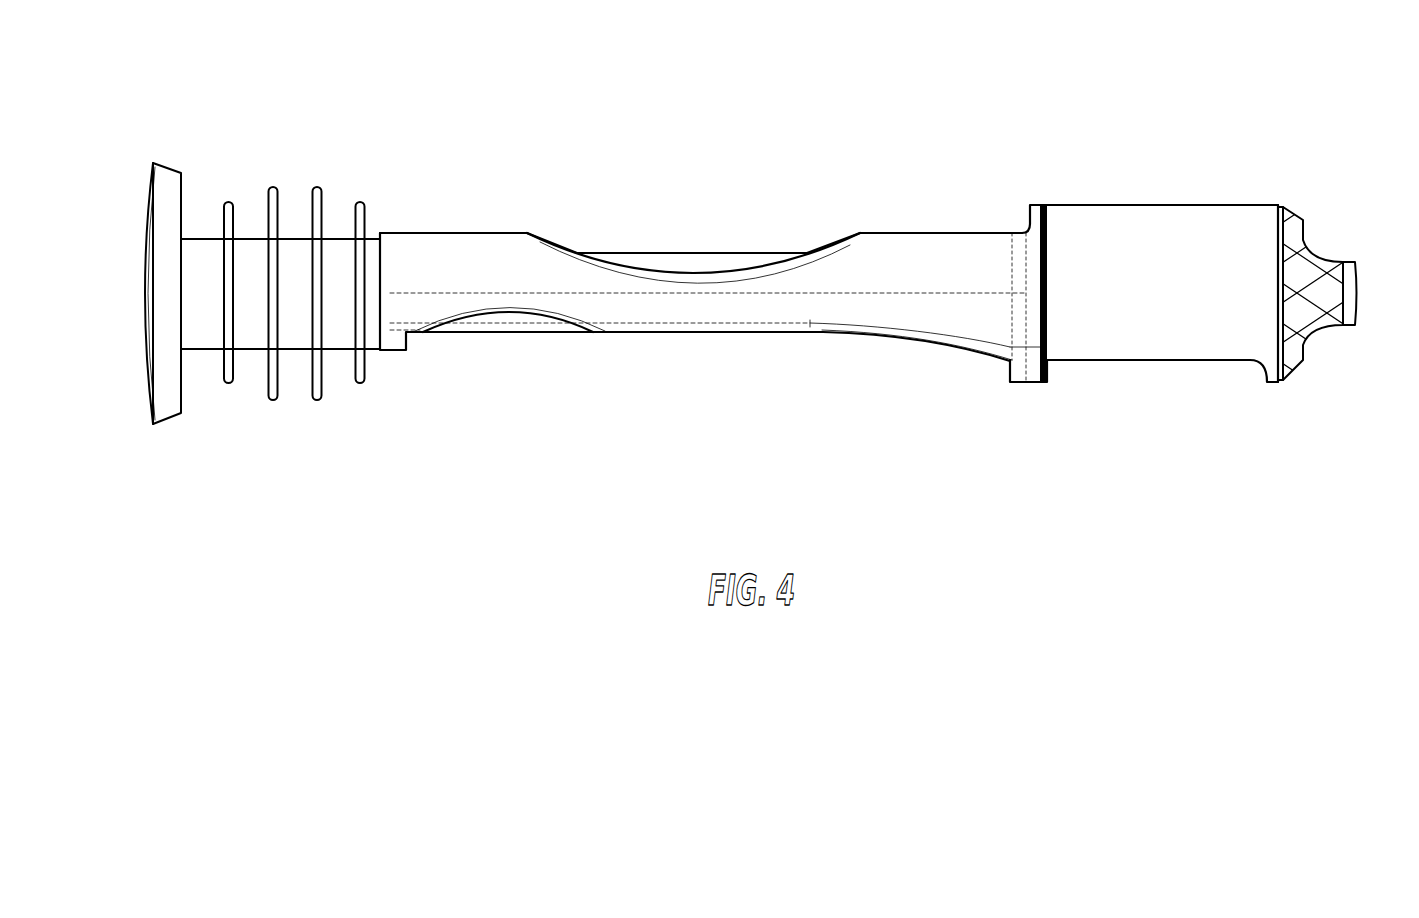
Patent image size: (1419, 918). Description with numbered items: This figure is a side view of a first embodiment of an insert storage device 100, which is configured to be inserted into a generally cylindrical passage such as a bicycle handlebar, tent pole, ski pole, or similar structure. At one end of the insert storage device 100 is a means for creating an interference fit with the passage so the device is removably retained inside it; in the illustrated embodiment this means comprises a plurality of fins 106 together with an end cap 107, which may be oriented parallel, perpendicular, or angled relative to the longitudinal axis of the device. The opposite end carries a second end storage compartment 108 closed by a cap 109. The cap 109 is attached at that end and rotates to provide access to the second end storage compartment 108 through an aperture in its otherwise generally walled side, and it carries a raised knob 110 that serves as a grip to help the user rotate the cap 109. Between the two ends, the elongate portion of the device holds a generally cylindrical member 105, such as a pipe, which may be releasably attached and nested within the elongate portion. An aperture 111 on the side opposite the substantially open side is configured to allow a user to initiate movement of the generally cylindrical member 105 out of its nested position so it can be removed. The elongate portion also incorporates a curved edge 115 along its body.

The insert storage device 100 is at (131, 91).
The generally cylindrical member 105 is at (709, 258).
The fins 106 is at (232, 382).
The end cap 107 is at (167, 386).
The second end storage compartment 108 is at (1157, 372).
The cap 109 is at (1163, 225).
The raised knob 110 is at (1341, 260).
The aperture 111 is at (793, 240).
The curved edge 115 is at (523, 310).